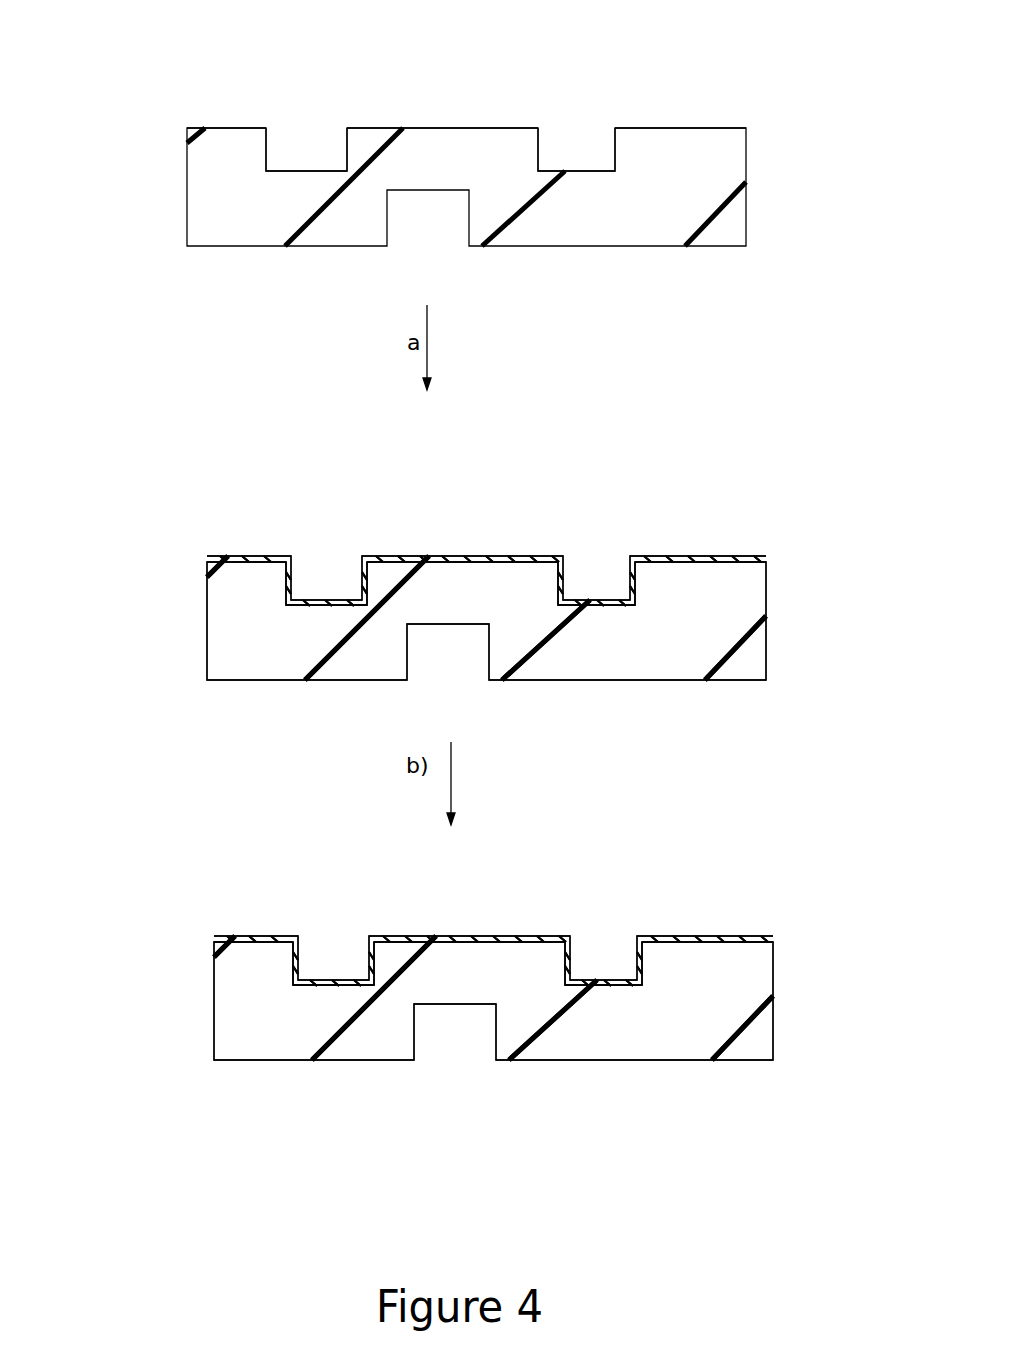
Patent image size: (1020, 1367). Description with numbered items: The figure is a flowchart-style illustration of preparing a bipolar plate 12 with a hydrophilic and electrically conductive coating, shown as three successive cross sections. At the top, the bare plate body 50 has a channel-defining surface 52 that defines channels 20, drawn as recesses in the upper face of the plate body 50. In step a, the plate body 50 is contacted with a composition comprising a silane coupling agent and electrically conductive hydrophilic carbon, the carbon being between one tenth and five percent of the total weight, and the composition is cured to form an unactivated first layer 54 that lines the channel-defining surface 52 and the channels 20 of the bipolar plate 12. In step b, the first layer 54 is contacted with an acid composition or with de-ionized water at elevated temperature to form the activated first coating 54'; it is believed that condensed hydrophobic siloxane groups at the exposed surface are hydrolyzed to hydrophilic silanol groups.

The bipolar plate 12 is at (428, 815).
The channels 20 is at (456, 492).
The plate body 50 is at (450, 648).
The channel-defining surface 52 is at (480, 502).
The first layer 54 is at (486, 533).
The activated first coating 54' is at (493, 915).